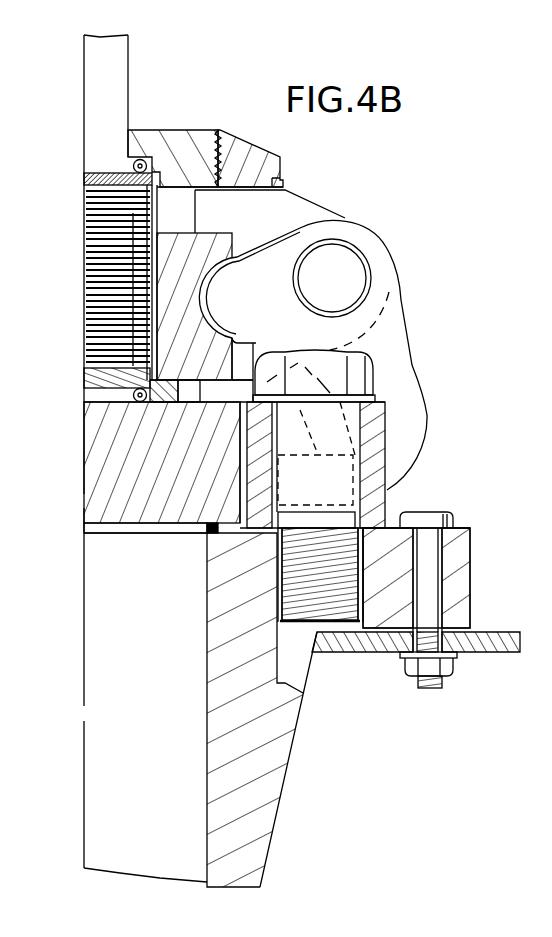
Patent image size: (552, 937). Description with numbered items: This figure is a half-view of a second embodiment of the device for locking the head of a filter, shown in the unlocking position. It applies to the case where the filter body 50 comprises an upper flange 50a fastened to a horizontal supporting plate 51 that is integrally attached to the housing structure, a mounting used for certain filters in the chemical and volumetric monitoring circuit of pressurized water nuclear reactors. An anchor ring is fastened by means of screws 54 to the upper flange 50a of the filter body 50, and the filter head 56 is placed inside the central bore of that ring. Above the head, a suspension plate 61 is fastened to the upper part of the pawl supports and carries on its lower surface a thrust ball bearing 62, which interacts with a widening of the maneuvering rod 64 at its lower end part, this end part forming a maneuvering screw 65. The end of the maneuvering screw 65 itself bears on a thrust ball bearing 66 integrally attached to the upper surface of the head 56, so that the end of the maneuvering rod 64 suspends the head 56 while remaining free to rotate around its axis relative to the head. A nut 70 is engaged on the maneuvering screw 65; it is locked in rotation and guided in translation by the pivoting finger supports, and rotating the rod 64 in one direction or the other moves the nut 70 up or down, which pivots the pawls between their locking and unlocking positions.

The maneuvering rod 64 is at (122, 73).
The suspension plate 61 is at (192, 157).
The thrust ball bearing 62 is at (143, 160).
The maneuvering screw 65 is at (97, 307).
The thrust ball bearing 66 is at (138, 399).
The nut 70 is at (220, 247).
The screw 54 is at (365, 377).
The filter head 56 is at (188, 492).
The filter body 50 is at (266, 764).
The upper flange 50a is at (464, 562).
The horizontal supporting plate 51 is at (494, 638).